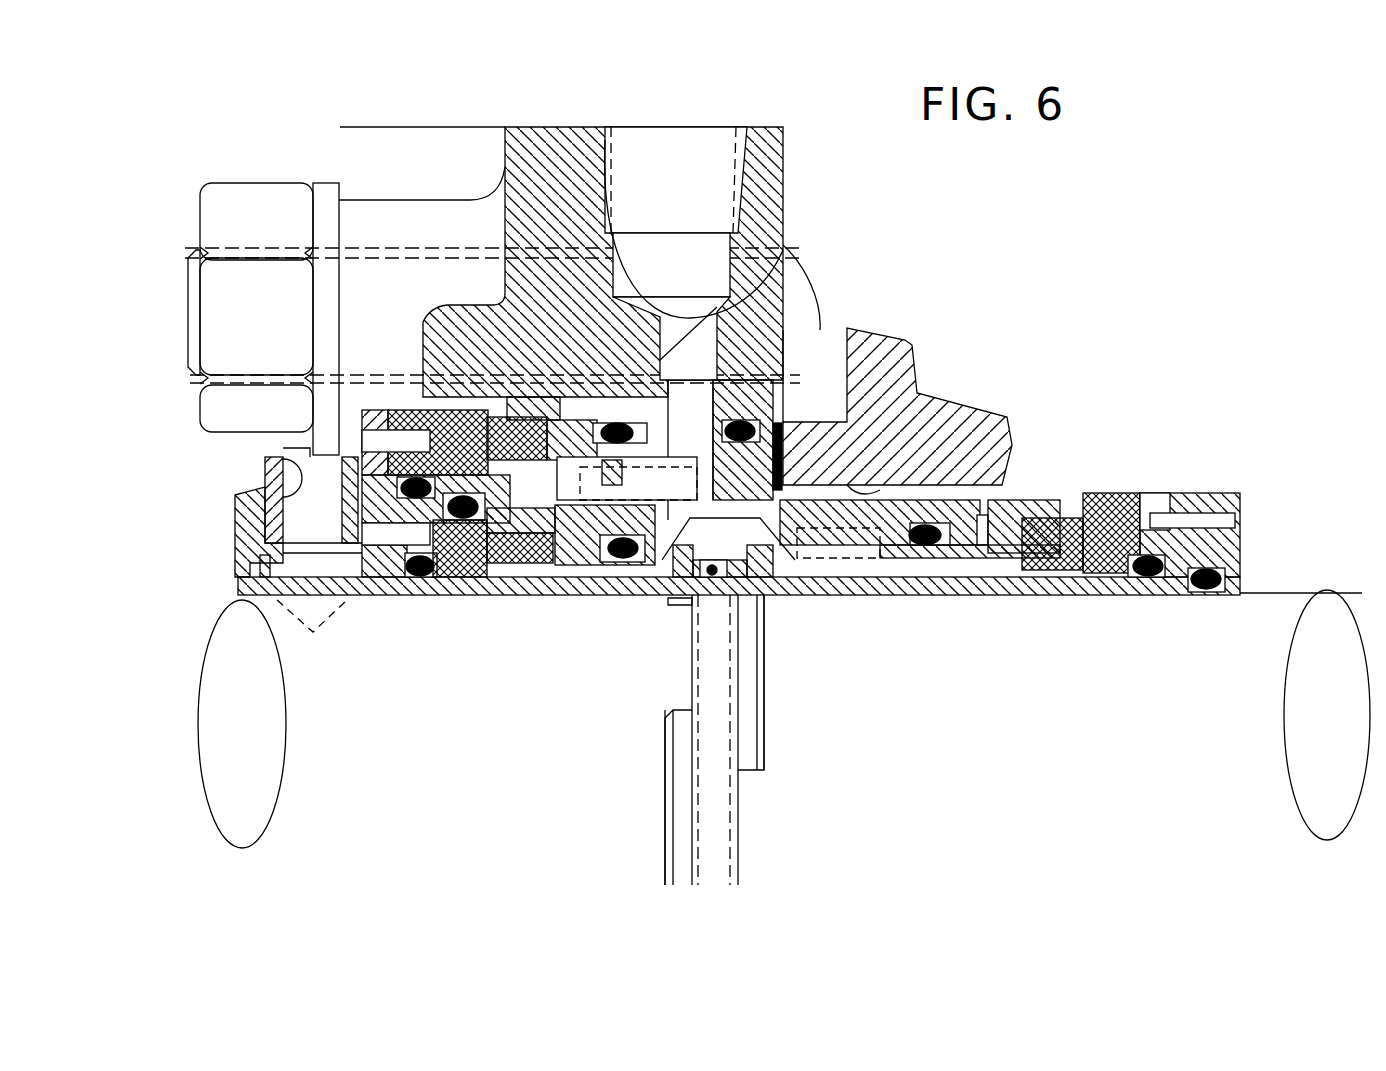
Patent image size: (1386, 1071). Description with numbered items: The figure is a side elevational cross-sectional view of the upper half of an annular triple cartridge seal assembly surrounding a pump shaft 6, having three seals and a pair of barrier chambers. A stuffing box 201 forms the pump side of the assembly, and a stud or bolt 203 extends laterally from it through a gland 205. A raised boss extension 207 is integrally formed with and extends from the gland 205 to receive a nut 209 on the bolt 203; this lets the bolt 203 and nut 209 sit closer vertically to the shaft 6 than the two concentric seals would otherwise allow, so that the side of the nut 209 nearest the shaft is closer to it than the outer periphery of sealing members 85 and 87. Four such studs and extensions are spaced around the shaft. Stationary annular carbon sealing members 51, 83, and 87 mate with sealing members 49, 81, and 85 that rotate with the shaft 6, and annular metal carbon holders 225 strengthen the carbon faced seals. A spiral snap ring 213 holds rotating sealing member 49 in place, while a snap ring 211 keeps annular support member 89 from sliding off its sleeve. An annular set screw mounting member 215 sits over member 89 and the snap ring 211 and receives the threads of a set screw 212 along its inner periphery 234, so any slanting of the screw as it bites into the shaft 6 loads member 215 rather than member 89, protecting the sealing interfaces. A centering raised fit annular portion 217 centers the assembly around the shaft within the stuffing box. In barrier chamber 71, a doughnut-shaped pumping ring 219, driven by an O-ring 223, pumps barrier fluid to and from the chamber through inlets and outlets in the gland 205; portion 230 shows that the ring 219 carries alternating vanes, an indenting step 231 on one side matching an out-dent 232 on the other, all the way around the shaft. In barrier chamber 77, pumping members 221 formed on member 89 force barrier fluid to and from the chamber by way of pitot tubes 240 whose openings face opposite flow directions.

The pump shaft 6 is at (1258, 600).
The rotating sealing member 49 is at (1140, 495).
The stationary annular carbon sealing member 51 is at (958, 565).
The barrier chamber 71 is at (638, 575).
The barrier chamber 77 is at (613, 420).
The mating sealing member 81 is at (462, 595).
The stationary annular carbon sealing member 83 is at (540, 592).
The mating sealing member 85 is at (395, 410).
The stationary annular carbon sealing member 87 is at (460, 400).
The annular support member 89 is at (362, 443).
The stuffing box 201 is at (958, 415).
The stud or bolt 203 is at (190, 280).
The gland 205 is at (553, 140).
The raised boss extension 207 is at (472, 210).
The nut 209 is at (228, 195).
The snap ring 211 is at (258, 578).
The set screw 212 is at (300, 512).
The spiral snap ring 213 is at (1056, 600).
The annular set screw mounting member 215 is at (253, 508).
The centering raised fit annular portion 217 is at (917, 442).
The annular pumping ring 219 is at (690, 600).
The pumping members 221 is at (630, 127).
The O-ring 223 is at (712, 598).
The annular metal carbon holder 225 is at (548, 400).
The portion 230 is at (655, 773).
The indenting step 231 is at (690, 690).
The out-dent 232 is at (765, 722).
The inner periphery 234 is at (300, 448).
The pitot tubes 240 is at (770, 252).